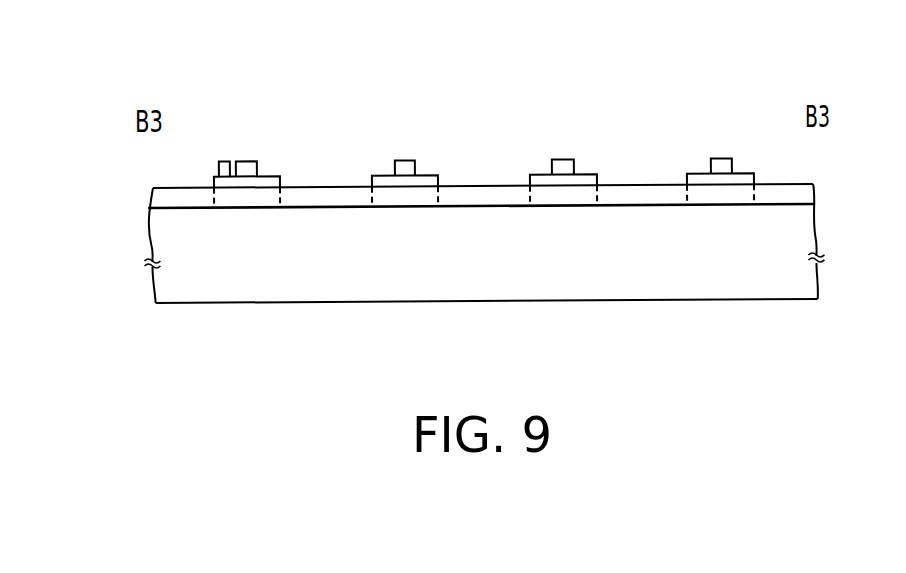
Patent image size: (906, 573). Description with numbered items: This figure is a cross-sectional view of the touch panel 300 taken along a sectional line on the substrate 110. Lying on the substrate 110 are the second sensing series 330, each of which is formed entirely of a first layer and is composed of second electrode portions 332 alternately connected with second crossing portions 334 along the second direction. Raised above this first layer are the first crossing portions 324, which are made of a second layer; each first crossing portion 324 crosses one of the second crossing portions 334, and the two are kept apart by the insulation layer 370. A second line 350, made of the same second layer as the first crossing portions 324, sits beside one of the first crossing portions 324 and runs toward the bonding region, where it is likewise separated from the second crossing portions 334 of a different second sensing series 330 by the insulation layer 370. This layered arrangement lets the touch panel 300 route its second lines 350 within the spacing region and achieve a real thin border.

The substrate 110 is at (797, 238).
The touch panel 300 is at (882, 347).
The first crossing portion 324 is at (247, 160).
The second sensing series 330 is at (481, 115).
The second electrode portion 332 is at (339, 197).
The second crossing portion 334 is at (272, 198).
The second line 350 is at (222, 158).
The insulation layer 370 is at (268, 183).